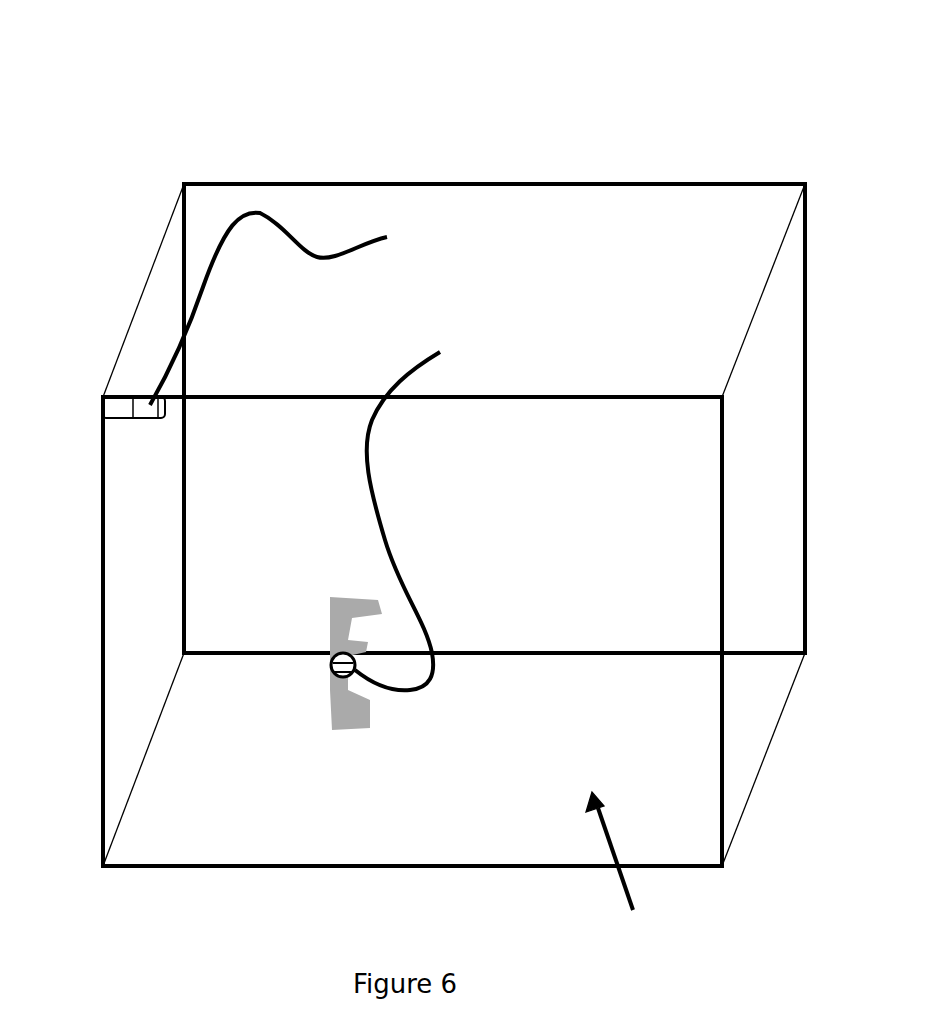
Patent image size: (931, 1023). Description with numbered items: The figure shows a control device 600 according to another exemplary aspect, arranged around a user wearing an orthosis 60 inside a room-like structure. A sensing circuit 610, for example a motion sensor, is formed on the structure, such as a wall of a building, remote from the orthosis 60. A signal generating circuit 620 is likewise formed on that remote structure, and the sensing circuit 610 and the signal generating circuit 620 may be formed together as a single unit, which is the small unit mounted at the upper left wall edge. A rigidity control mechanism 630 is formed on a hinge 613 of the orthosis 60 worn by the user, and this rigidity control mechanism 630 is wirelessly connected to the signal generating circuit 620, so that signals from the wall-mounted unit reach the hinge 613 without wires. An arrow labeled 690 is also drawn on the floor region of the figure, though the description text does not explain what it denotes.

The control device 600 is at (373, 60).
The sensing circuit 610 is at (115, 402).
The signal generating circuit 620 is at (307, 308).
The rigidity control mechanism 630 is at (428, 505).
The hinge 613 is at (335, 657).
The orthosis 60 is at (358, 727).
The gravity / orientation direction 690 is at (643, 872).